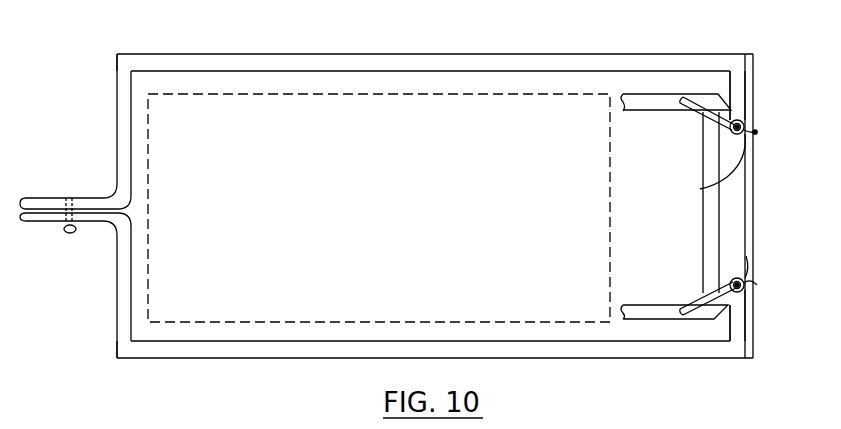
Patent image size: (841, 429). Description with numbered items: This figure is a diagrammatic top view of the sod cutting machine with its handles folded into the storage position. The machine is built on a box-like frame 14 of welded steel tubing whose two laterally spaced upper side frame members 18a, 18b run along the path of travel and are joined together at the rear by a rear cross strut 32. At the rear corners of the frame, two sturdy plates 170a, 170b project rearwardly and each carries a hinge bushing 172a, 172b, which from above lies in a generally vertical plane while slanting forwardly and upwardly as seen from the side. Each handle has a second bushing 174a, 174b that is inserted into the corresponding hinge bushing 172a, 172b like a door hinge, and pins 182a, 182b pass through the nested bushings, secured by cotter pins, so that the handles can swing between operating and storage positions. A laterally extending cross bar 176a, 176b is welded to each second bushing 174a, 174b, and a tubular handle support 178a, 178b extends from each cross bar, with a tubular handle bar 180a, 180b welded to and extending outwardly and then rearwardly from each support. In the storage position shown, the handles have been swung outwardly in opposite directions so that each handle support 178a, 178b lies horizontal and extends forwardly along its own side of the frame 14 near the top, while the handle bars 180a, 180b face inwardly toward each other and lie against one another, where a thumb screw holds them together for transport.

The frame 14 is at (395, 97).
The upper side frame member 18a is at (642, 104).
The upper side frame member 18b is at (637, 305).
The rear cross strut 32 is at (716, 214).
The plate 170a is at (708, 110).
The plate 170b is at (710, 305).
The hinge bushing 172a is at (757, 134).
The hinge bushing 172b is at (757, 286).
The second bushing 174a is at (702, 189).
The second bushing 174b is at (746, 256).
The cross bar 176a is at (738, 87).
The cross bar 176b is at (738, 329).
The handle support 178a is at (579, 58).
The handle support 178b is at (574, 346).
The handle bar 180a is at (122, 134).
The handle bar 180b is at (124, 279).
The pin 182a is at (723, 141).
The pin 182b is at (722, 272).